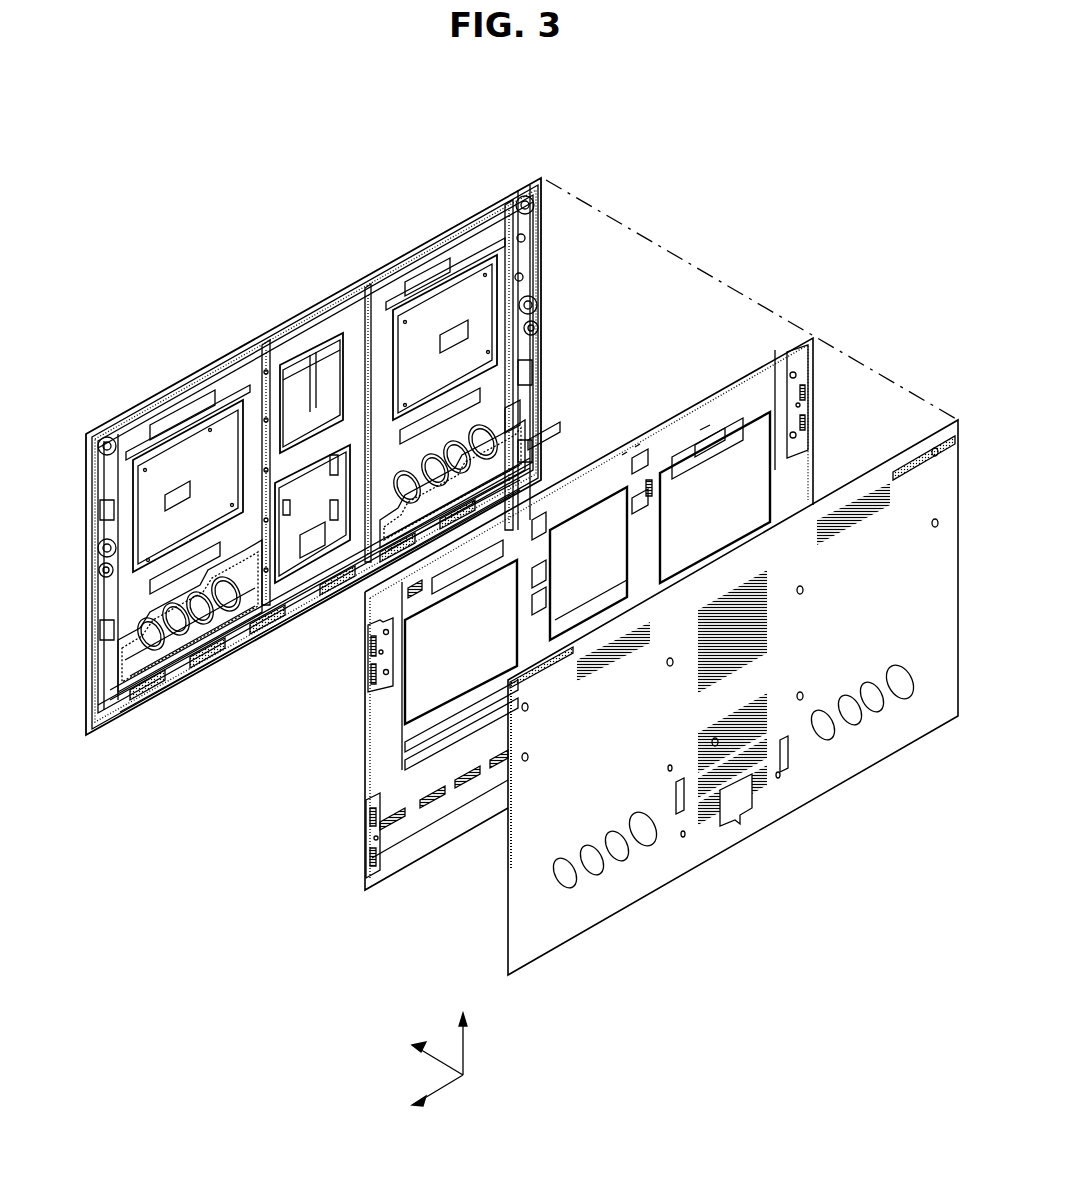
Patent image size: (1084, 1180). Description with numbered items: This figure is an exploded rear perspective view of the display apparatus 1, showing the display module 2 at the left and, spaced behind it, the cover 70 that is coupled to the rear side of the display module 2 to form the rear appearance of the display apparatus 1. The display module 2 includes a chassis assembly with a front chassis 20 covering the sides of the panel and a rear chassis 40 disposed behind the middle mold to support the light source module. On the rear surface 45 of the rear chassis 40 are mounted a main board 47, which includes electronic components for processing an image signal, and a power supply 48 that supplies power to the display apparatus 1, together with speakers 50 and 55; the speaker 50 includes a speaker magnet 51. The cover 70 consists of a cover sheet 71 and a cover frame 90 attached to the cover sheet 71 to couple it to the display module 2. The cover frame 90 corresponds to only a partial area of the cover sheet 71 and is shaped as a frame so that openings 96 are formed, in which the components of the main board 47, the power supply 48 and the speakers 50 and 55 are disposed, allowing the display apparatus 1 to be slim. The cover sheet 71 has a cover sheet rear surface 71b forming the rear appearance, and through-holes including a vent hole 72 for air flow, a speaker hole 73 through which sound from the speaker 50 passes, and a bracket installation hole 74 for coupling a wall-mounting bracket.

The display apparatus 1 is at (650, 110).
The display module 2 is at (366, 268).
The front chassis 20 is at (312, 303).
The rear chassis 40 is at (258, 380).
The rear surface 45 is at (283, 356).
The main board 47 is at (170, 462).
The power supply 48 is at (468, 290).
The speaker 50 is at (528, 432).
The speaker magnet 51 is at (194, 628).
The speaker 55 is at (96, 566).
The cover 70 is at (942, 335).
The cover sheet 71 is at (928, 426).
The cover sheet rear surface 71b is at (542, 918).
The vent hole 72 is at (835, 537).
The speaker hole 73 is at (882, 700).
The bracket installation hole 74 is at (667, 770).
The cover frame 90 is at (795, 336).
The openings 96 is at (586, 532).